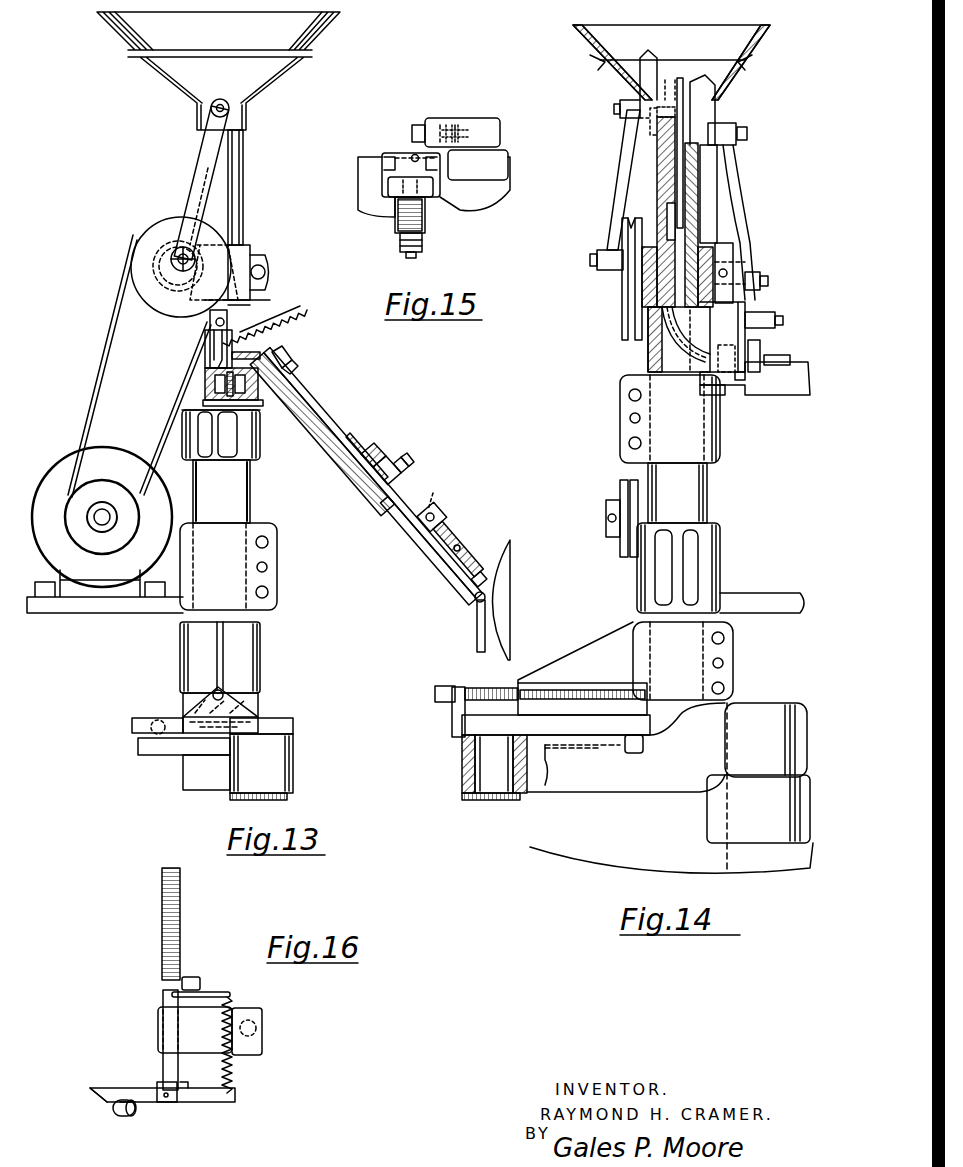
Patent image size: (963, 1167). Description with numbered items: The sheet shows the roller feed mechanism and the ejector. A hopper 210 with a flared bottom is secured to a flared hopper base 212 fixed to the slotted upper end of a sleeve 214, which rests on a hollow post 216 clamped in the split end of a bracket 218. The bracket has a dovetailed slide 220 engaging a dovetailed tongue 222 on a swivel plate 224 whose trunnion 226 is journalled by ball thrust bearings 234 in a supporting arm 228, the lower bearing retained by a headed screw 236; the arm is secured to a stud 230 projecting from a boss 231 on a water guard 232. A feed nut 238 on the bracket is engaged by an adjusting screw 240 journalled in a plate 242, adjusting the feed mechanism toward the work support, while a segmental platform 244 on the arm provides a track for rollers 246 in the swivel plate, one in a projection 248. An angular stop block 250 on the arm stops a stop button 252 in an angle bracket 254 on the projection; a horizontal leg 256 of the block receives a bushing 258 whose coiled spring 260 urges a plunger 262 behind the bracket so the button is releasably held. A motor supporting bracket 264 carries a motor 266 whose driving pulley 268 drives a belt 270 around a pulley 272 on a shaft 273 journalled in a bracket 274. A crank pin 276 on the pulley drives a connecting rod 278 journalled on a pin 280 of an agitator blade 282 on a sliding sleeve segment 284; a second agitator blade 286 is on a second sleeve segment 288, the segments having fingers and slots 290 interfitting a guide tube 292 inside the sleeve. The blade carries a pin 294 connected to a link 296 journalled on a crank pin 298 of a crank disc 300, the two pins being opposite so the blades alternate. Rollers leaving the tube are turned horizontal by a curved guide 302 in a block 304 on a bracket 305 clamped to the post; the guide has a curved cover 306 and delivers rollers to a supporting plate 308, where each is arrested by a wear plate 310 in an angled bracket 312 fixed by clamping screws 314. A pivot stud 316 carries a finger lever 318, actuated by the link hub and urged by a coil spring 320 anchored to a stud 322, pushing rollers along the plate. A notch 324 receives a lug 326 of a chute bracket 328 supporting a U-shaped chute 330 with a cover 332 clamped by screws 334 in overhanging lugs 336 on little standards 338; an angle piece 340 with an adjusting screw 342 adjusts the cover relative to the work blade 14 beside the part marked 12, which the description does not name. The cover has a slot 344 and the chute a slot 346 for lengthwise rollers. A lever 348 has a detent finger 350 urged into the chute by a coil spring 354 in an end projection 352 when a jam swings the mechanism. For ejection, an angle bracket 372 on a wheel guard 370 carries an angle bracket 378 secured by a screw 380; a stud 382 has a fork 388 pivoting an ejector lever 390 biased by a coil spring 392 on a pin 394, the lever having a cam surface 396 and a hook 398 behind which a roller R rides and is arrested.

In FIG. 13, the blade 12 is at (500, 620).
In FIG. 13, the work blade 14 is at (486, 608).
In FIG. 13, the roller R is at (486, 594).
In FIG. 16, the roller R is at (122, 1116).
In FIG. 13, the hopper 210 is at (243, 40).
In FIG. 14, the hopper 210 is at (598, 31).
In FIG. 13, the hopper base 212 is at (185, 78).
In FIG. 14, the hopper base 212 is at (735, 76).
In FIG. 13, the sleeve 214 is at (243, 160).
In FIG. 14, the sleeve 214 is at (657, 163).
In FIG. 13, the hollow post 216 is at (252, 300).
In FIG. 14, the hollow post 216 is at (648, 344).
In FIG. 13, the bracket 218 is at (262, 640).
In FIG. 14, the bracket 218 is at (686, 666).
In FIG. 13, the dovetailed slide 220 is at (260, 706).
In FIG. 14, the dovetailed slide 220 is at (582, 700).
In FIG. 13, the dovetailed tongue 222 is at (220, 715).
In FIG. 14, the dovetailed tongue 222 is at (478, 712).
In FIG. 13, the swivel plate 224 is at (293, 722).
In FIG. 14, the swivel plate 224 is at (556, 725).
In FIG. 14, the trunnion 226 is at (490, 750).
In FIG. 13, the supporting arm 228 is at (293, 762).
In FIG. 15, the supporting arm 228 is at (470, 205).
In FIG. 14, the supporting arm 228 is at (563, 775).
In FIG. 14, the stud 230 is at (770, 703).
In FIG. 14, the boss 231 is at (707, 810).
In FIG. 14, the water guard 232 is at (640, 850).
In FIG. 14, the ball thrust bearings 234 is at (462, 740).
In FIG. 13, the headed screw 236 is at (287, 798).
In FIG. 14, the headed screw 236 is at (470, 800).
In FIG. 14, the feed nut 238 is at (532, 675).
In FIG. 13, the adjusting screw 240 is at (228, 692).
In FIG. 14, the adjusting screw 240 is at (480, 688).
In FIG. 13, the plate 242 is at (255, 690).
In FIG. 14, the plate 242 is at (440, 686).
In FIG. 13, the segmental extension or platform 244 is at (140, 750).
In FIG. 15, the segmental extension or platform 244 is at (508, 165).
In FIG. 14, the segmental extension or platform 244 is at (640, 755).
In FIG. 13, the rollers 246 is at (150, 718).
In FIG. 15, the rollers 246 is at (470, 145).
In FIG. 14, the rollers 246 is at (630, 745).
In FIG. 13, the projection 248 is at (132, 724).
In FIG. 15, the projection 248 is at (500, 134).
In FIG. 15, the angular stop block 250 is at (382, 155).
In FIG. 15, the stop button 252 is at (412, 150).
In FIG. 15, the angle bracket 254 is at (432, 118).
In FIG. 15, the horizontal leg 256 is at (388, 185).
In FIG. 15, the bushing 258 is at (395, 225).
In FIG. 15, the coiled spring 260 is at (425, 225).
In FIG. 15, the plunger 262 is at (408, 258).
In FIG. 13, the motor supporting bracket 264 is at (100, 606).
In FIG. 14, the motor supporting bracket 264 is at (750, 598).
In FIG. 13, the motor 266 is at (52, 462).
In FIG. 13, the driving pulley 268 is at (106, 484).
In FIG. 14, the driving pulley 268 is at (620, 490).
In FIG. 13, the belt 270 is at (100, 412).
In FIG. 13, the pulley 272 is at (150, 300).
In FIG. 14, the pulley 272 is at (620, 316).
In FIG. 13, the shaft 273 is at (160, 272).
In FIG. 14, the shaft 273 is at (733, 262).
In FIG. 13, the bracket 274 is at (268, 250).
In FIG. 14, the bracket 274 is at (642, 300).
In FIG. 13, the crank pin 276 is at (172, 250).
In FIG. 14, the crank pin 276 is at (590, 262).
In FIG. 13, the connecting rod 278 is at (198, 182).
In FIG. 14, the connecting rod 278 is at (617, 193).
In FIG. 13, the pin 280 is at (208, 110).
In FIG. 14, the pin 280 is at (614, 109).
In FIG. 14, the agitator blade 282 is at (655, 68).
In FIG. 14, the sliding sleeve segment 284 is at (650, 133).
In FIG. 14, the agitator blade 286 is at (703, 75).
In FIG. 14, the second sleeve segment 288 is at (717, 162).
In FIG. 14, the fingers and slots 290 is at (692, 221).
In FIG. 14, the guide tube 292 is at (668, 237).
In FIG. 14, the pin 294 is at (747, 130).
In FIG. 14, the link 296 is at (740, 200).
In FIG. 14, the crank pin 298 is at (768, 282).
In FIG. 14, the crank disc 300 is at (733, 250).
In FIG. 14, the curved guide 302 is at (672, 340).
In FIG. 14, the block 304 is at (745, 312).
In FIG. 13, the bracket 305 is at (205, 383).
In FIG. 14, the bracket 305 is at (720, 440).
In FIG. 14, the curved cover 306 is at (680, 345).
In FIG. 13, the supporting plate 308 is at (205, 370).
In FIG. 14, the supporting plate 308 is at (742, 385).
In FIG. 13, the wear plate 310 is at (205, 350).
In FIG. 14, the wear plate 310 is at (775, 395).
In FIG. 14, the angled bracket 312 is at (760, 350).
In FIG. 14, the clamping screws 314 is at (780, 356).
In FIG. 14, the pivot stud 316 is at (775, 316).
In FIG. 13, the finger lever 318 is at (210, 335).
In FIG. 14, the finger lever 318 is at (727, 345).
In FIG. 13, the coil spring 320 is at (307, 313).
In FIG. 13, the stud 322 is at (305, 306).
In FIG. 14, the notch 324 is at (720, 395).
In FIG. 13, the lug 326 is at (215, 392).
In FIG. 13, the chute bracket 328 is at (258, 440).
In FIG. 13, the U-shaped chute 330 is at (388, 510).
In FIG. 13, the cover 332 is at (305, 397).
In FIG. 13, the screws 334 is at (290, 352).
In FIG. 13, the overhanging lugs 336 is at (296, 366).
In FIG. 13, the little standards 338 is at (268, 352).
In FIG. 13, the angle piece 340 is at (375, 447).
In FIG. 13, the adjusting screw 342 is at (393, 455).
In FIG. 13, the slot 344 is at (323, 410).
In FIG. 13, the slot 346 is at (432, 552).
In FIG. 13, the lever 348 is at (462, 538).
In FIG. 13, the detent finger 350 is at (480, 570).
In FIG. 13, the end projection 352 is at (446, 514).
In FIG. 13, the coil spring 354 is at (443, 495).
In FIG. 16, the wheel guard 370 is at (162, 930).
In FIG. 16, the angle bracket 372 is at (195, 977).
In FIG. 16, the angle bracket 378 is at (262, 1045).
In FIG. 16, the screw 380 is at (252, 1015).
In FIG. 16, the stud 382 is at (163, 1000).
In FIG. 16, the fork 388 is at (157, 1085).
In FIG. 16, the ejector lever 390 is at (197, 1102).
In FIG. 16, the coil spring 392 is at (232, 1076).
In FIG. 16, the pin 394 is at (213, 992).
In FIG. 16, the cam surface 396 is at (95, 1102).
In FIG. 16, the hook 398 is at (112, 1110).